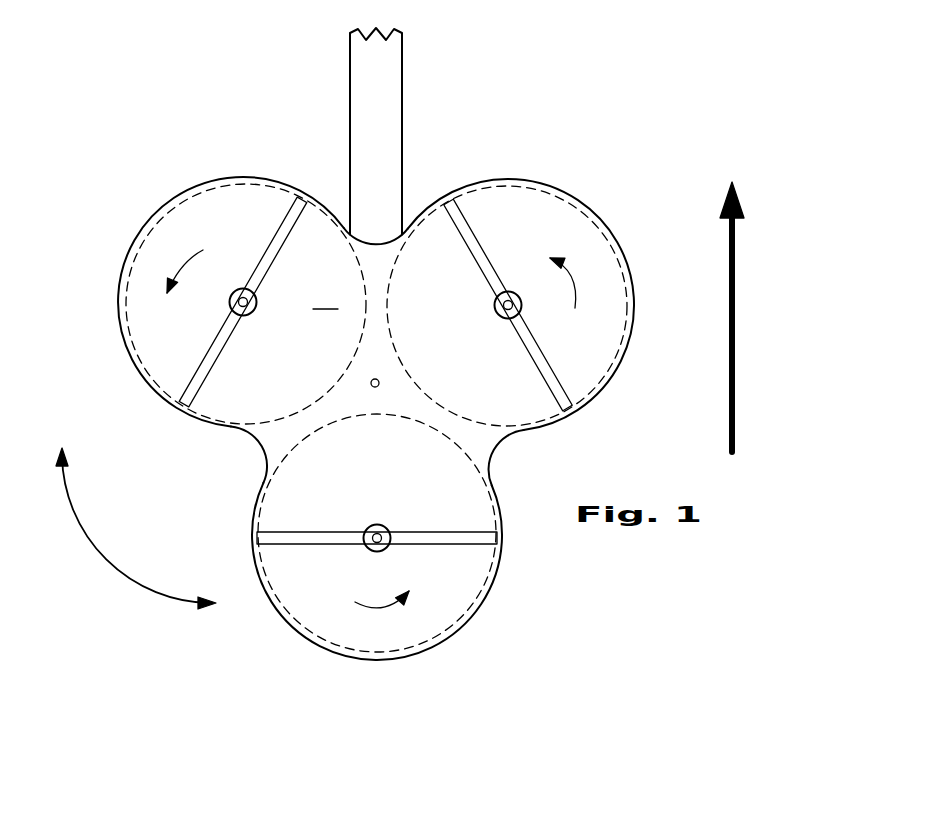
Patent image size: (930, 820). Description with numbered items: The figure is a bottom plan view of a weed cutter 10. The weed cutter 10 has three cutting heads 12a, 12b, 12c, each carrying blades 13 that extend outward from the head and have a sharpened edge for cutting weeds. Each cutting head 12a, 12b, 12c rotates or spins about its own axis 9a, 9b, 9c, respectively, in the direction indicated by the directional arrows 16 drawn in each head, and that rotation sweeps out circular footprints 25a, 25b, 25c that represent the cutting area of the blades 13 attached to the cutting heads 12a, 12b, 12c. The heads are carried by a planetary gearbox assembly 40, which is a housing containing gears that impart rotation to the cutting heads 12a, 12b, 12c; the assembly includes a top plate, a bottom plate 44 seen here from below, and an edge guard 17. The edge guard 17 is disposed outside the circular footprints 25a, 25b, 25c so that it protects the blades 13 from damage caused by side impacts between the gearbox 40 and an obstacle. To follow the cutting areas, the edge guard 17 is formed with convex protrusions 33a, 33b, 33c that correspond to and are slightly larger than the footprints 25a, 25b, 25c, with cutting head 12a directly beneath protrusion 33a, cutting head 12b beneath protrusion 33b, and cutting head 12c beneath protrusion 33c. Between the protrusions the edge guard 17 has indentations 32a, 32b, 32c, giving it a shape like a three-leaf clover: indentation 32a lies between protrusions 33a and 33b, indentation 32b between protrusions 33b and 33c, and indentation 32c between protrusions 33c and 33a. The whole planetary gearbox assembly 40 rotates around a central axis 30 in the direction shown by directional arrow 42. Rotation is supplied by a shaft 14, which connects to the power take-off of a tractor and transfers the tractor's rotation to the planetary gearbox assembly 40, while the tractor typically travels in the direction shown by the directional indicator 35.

The weed cutter 10 is at (498, 80).
The shaft 14 is at (387, 137).
The edge guard 17 is at (605, 222).
The planetary gearbox assembly 40 is at (208, 183).
The circular footprint 25a is at (568, 200).
The circular footprint 25b is at (286, 620).
The circular footprint 25c is at (132, 256).
The convex protrusion 33a is at (600, 393).
The convex protrusion 33b is at (460, 633).
The convex protrusion 33c is at (128, 347).
The indentation 32a is at (497, 447).
The indentation 32b is at (255, 450).
The indentation 32c is at (368, 242).
The blades 13 is at (284, 222).
The cutting head 12a is at (495, 305).
The cutting head 12b is at (377, 550).
The cutting head 12c is at (258, 304).
The axis 9a is at (513, 295).
The axis 9b is at (378, 524).
The axis 9c is at (238, 291).
The directional arrows 16 is at (178, 267).
The central axis 30 is at (376, 378).
The bottom plate 44 is at (327, 297).
The directional indicator 35 is at (735, 292).
The directional arrow 42 is at (100, 560).